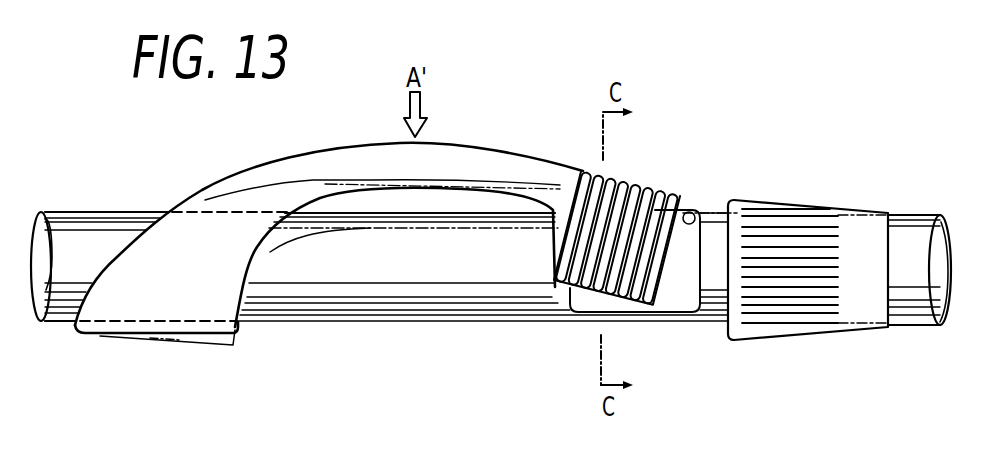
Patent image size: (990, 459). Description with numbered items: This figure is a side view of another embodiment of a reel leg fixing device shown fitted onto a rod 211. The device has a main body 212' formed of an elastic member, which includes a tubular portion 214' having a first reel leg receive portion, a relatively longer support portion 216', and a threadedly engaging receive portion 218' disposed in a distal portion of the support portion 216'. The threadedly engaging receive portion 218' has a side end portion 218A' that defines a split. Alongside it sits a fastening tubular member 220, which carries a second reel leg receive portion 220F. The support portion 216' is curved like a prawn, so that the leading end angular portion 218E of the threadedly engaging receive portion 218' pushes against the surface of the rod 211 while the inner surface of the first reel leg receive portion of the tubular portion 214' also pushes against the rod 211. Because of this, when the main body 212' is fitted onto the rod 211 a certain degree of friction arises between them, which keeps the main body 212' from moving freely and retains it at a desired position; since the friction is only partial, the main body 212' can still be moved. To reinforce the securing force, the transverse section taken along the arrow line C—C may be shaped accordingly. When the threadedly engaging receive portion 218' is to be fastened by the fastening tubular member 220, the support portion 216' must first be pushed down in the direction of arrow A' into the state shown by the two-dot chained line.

The rod 211 is at (82, 243).
The main body 212' is at (329, 201).
The tubular portion 214' is at (156, 245).
The support portion 216' is at (382, 213).
The threadedly engaging receive portion 218' is at (617, 215).
The leading end angular portion 218E is at (692, 216).
The side end portion 218A' is at (555, 335).
The fastening tubular member 220 is at (807, 222).
The second reel leg receive portion 220F is at (730, 336).